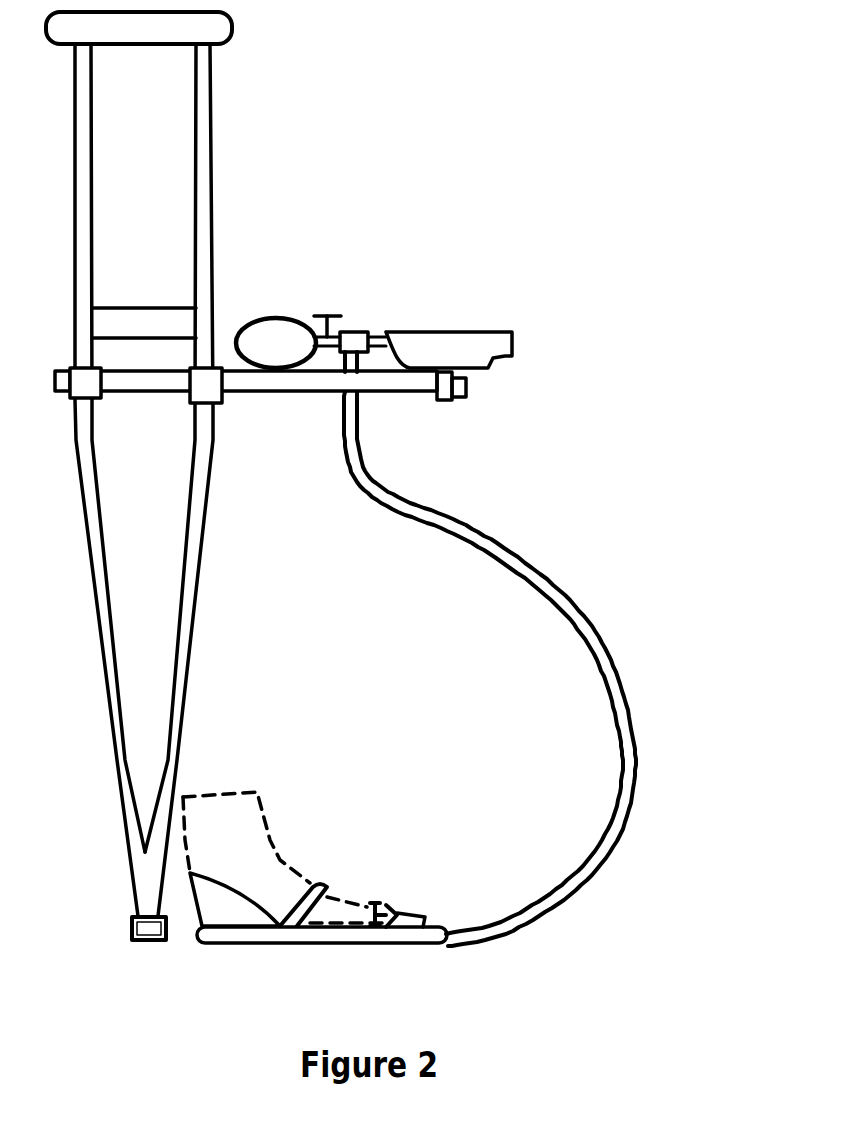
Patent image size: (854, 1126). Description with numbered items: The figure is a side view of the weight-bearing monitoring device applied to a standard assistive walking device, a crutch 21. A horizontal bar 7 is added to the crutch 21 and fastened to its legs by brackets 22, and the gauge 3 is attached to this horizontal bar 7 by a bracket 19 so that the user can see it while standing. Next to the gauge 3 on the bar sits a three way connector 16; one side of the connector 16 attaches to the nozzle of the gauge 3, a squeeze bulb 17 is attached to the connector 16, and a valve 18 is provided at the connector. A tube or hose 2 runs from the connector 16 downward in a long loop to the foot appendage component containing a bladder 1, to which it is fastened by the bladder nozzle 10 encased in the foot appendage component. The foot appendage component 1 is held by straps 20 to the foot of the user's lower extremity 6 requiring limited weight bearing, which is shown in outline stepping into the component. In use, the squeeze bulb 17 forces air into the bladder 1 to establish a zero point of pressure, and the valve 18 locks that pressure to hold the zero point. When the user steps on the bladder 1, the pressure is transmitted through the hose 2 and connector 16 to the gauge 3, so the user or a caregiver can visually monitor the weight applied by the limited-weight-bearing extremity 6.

The foot appendage component containing bladder 1 is at (327, 952).
The tube or hose 2 is at (630, 680).
The gauge 3 is at (437, 323).
The user's lower extremity requiring limited weight bearing 6 is at (275, 823).
The horizontal bar holding gauge 7 is at (277, 405).
The bladder nozzle encased in foot appendage component 10 is at (447, 958).
The three way connector 16 is at (360, 323).
The squeeze bulb 17 is at (280, 317).
The valve 18 is at (328, 313).
The bracket 19 is at (452, 410).
The straps holding foot appendage component 20 is at (322, 880).
The assistive walking device, i.e. crutch 21 is at (218, 93).
The brackets holding horizontal bar 22 is at (182, 413).